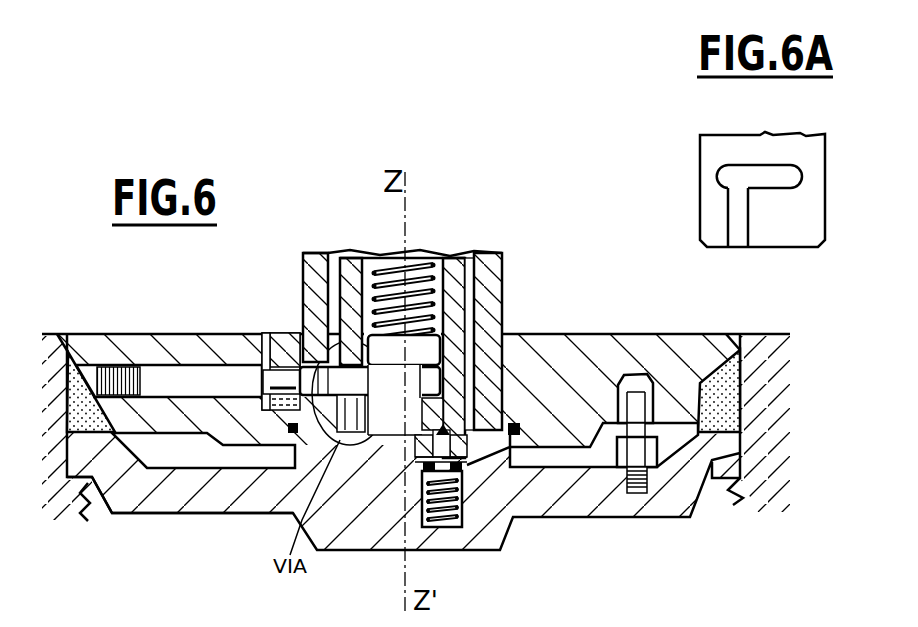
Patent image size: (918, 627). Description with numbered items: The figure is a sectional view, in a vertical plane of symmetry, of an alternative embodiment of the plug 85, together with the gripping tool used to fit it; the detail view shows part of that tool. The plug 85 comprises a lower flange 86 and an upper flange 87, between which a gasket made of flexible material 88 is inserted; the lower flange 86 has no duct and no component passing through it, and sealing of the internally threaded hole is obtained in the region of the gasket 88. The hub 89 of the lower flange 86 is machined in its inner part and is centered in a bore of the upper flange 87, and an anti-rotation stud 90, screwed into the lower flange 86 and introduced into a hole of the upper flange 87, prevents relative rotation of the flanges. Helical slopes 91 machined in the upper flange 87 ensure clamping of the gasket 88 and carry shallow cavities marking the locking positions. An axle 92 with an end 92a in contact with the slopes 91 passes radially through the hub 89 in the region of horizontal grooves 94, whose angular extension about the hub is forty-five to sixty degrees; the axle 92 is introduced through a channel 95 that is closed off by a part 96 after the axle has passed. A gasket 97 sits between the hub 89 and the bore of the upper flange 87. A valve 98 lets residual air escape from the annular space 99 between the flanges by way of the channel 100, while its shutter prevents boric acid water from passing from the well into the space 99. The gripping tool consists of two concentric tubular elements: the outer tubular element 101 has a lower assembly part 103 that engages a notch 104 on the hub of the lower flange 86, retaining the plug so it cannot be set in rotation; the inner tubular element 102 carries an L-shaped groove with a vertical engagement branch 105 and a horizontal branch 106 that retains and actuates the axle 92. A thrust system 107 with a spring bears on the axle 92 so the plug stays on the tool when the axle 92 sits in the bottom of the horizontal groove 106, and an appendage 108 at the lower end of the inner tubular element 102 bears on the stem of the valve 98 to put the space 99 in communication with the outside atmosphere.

In FIG. 6, the plug 85 is at (605, 523).
In FIG. 6, the lower flange 86 is at (360, 540).
In FIG. 6, the upper flange 87 is at (250, 350).
In FIG. 6, the gasket made of flexible material 88 is at (64, 445).
In FIG. 6, the hub 89 is at (500, 397).
In FIG. 6, the anti-rotation stud 90 is at (637, 403).
In FIG. 6, the helical slopes 91 is at (287, 330).
In FIG. 6, the axle 92 is at (380, 383).
In FIG. 6, the end of the axle 92a is at (263, 383).
In FIG. 6, the horizontal grooves 94 is at (320, 262).
In FIG. 6, the channel 95 is at (182, 362).
In FIG. 6, the part 96 is at (108, 362).
In FIG. 6, the gasket 97 is at (255, 440).
In FIG. 6, the valve 98 is at (437, 540).
In FIG. 6, the annular space 99 is at (192, 462).
In FIG. 6, the channel 100 is at (503, 533).
In FIG. 6, the outer tubular element 101 is at (493, 260).
In FIG. 6, the inner tubular element 102 is at (451, 260).
In FIG. 6A, the inner tubular element 102 is at (798, 230).
In FIG. 6, the lower assembly part 103 is at (507, 330).
In FIG. 6, the notch 104 is at (507, 343).
In FIG. 6A, the vertical engagement branch 105 is at (733, 220).
In FIG. 6A, the horizontal branch 106 is at (753, 180).
In FIG. 6, the thrust system 107 is at (422, 250).
In FIG. 6, the appendage 108 is at (500, 383).